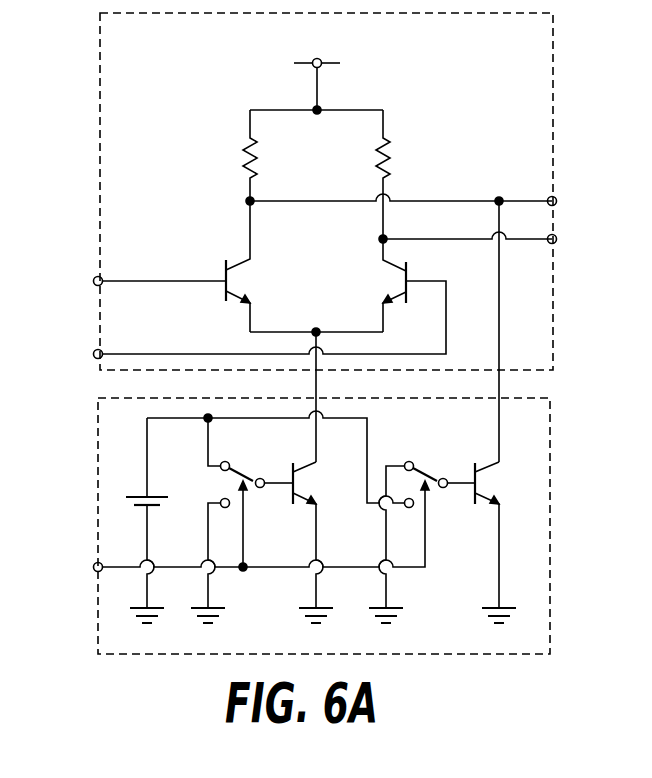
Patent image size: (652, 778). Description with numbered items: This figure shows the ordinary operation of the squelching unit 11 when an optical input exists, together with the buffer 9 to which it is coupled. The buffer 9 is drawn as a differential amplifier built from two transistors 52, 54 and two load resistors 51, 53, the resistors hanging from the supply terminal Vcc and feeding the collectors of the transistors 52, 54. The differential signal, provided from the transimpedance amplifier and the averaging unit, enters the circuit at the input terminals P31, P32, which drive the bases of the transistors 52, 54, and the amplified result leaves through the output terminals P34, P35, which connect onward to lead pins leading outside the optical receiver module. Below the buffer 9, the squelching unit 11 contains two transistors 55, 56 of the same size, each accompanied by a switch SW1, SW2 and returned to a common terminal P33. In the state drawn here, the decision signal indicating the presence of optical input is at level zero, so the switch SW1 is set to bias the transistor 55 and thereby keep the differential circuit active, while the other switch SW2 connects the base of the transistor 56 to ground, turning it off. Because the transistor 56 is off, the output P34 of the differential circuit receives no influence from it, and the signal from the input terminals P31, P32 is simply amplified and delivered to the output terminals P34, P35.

The buffer 9 is at (553, 37).
The squelching unit 11 is at (551, 420).
The resistor 51 is at (243, 152).
The resistor 53 is at (394, 154).
The transistor 52 is at (223, 263).
The transistor 54 is at (409, 268).
The transistor 55 is at (290, 498).
The transistor 56 is at (472, 496).
The switch SW1 is at (272, 456).
The switch SW2 is at (420, 468).
The input terminal P31 is at (92, 281).
The input terminal P32 is at (92, 354).
The bias terminal P33 is at (92, 567).
The output terminal P34 is at (557, 201).
The output terminal P35 is at (557, 239).
The power supply terminal Vcc is at (317, 71).